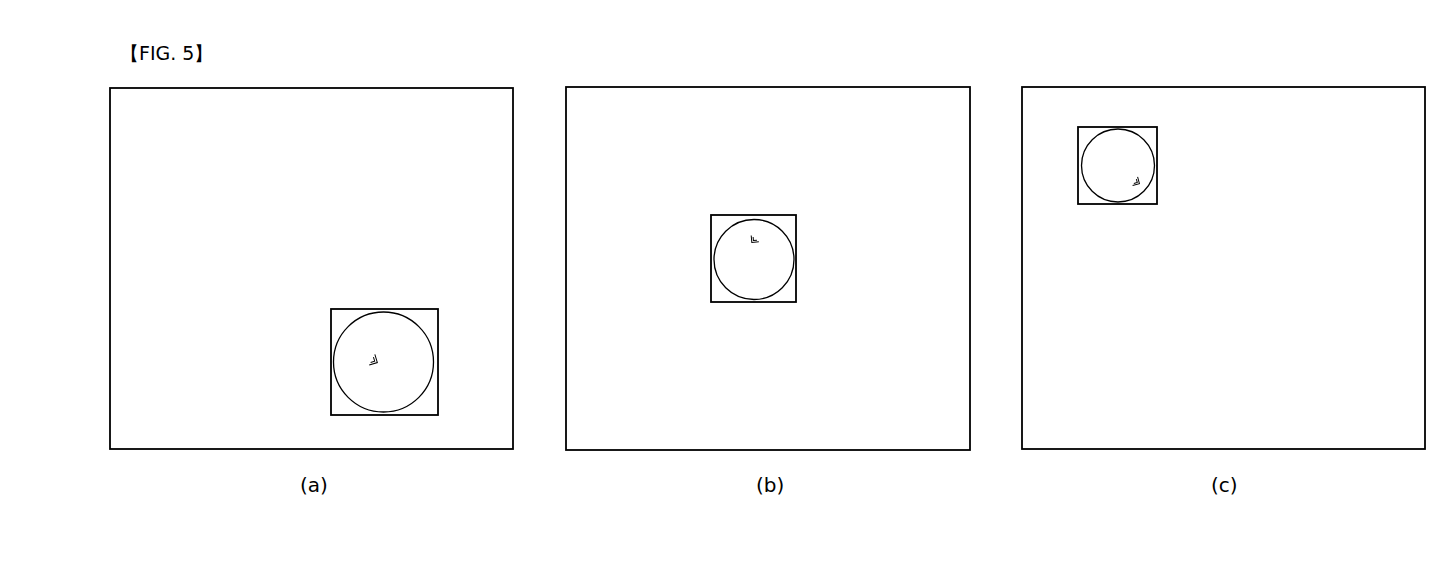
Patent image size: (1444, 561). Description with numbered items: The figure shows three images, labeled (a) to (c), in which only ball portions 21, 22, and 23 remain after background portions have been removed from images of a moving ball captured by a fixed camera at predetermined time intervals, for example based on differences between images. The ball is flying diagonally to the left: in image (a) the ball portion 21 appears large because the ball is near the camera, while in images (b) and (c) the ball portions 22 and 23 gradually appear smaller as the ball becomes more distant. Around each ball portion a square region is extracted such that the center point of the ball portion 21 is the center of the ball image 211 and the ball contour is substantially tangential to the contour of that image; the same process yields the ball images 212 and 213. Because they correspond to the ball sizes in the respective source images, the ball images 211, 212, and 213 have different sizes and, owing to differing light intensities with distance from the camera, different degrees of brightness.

The ball portion 21 is at (415, 313).
The ball image 211 is at (322, 364).
The ball portion 22 is at (723, 285).
The ball image 212 is at (707, 250).
The ball portion 23 is at (1092, 192).
The ball image 213 is at (1163, 163).